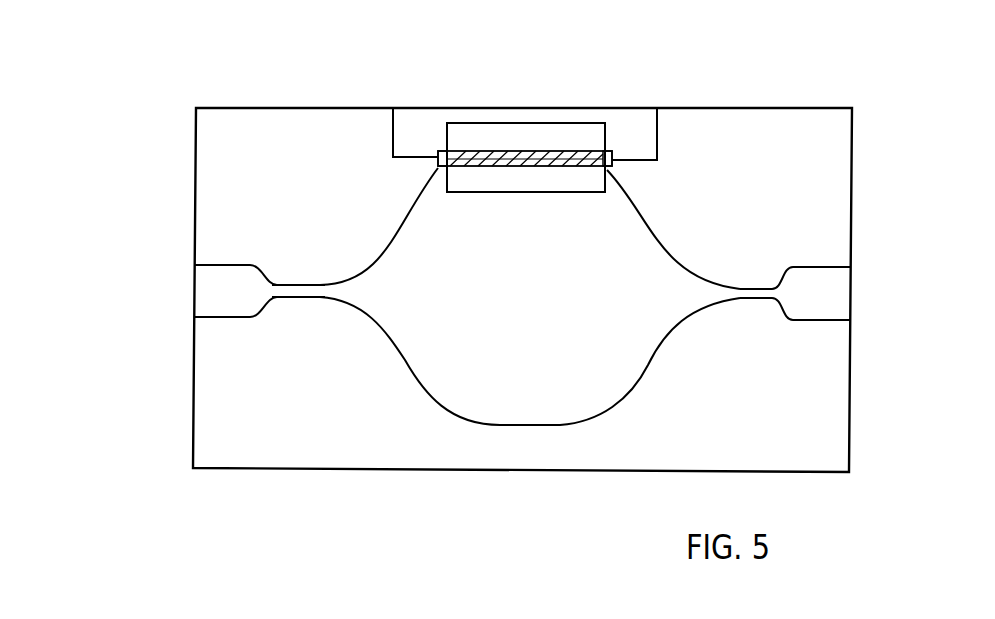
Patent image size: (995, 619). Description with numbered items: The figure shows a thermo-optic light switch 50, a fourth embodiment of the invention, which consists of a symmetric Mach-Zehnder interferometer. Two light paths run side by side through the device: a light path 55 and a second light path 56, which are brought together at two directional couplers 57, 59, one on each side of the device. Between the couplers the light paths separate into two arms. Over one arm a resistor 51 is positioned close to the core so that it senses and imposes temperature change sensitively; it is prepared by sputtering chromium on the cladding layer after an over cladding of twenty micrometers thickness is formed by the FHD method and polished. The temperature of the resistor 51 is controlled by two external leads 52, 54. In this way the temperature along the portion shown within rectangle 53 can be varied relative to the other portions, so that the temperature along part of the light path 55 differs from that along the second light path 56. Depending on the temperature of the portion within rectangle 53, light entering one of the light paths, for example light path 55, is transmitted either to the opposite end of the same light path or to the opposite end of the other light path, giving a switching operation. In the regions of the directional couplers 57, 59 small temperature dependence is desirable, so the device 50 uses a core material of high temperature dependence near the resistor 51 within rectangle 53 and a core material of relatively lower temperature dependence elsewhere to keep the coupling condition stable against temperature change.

The thermo-optic light switch 50 is at (857, 105).
The resistor 51 is at (531, 166).
The external lead 52 is at (393, 108).
The rectangle 53 is at (533, 123).
The external lead 54 is at (657, 108).
The light path 55 is at (188, 264).
The second light path 56 is at (186, 318).
The directional coupler 57 is at (290, 303).
The directional coupler 59 is at (755, 307).